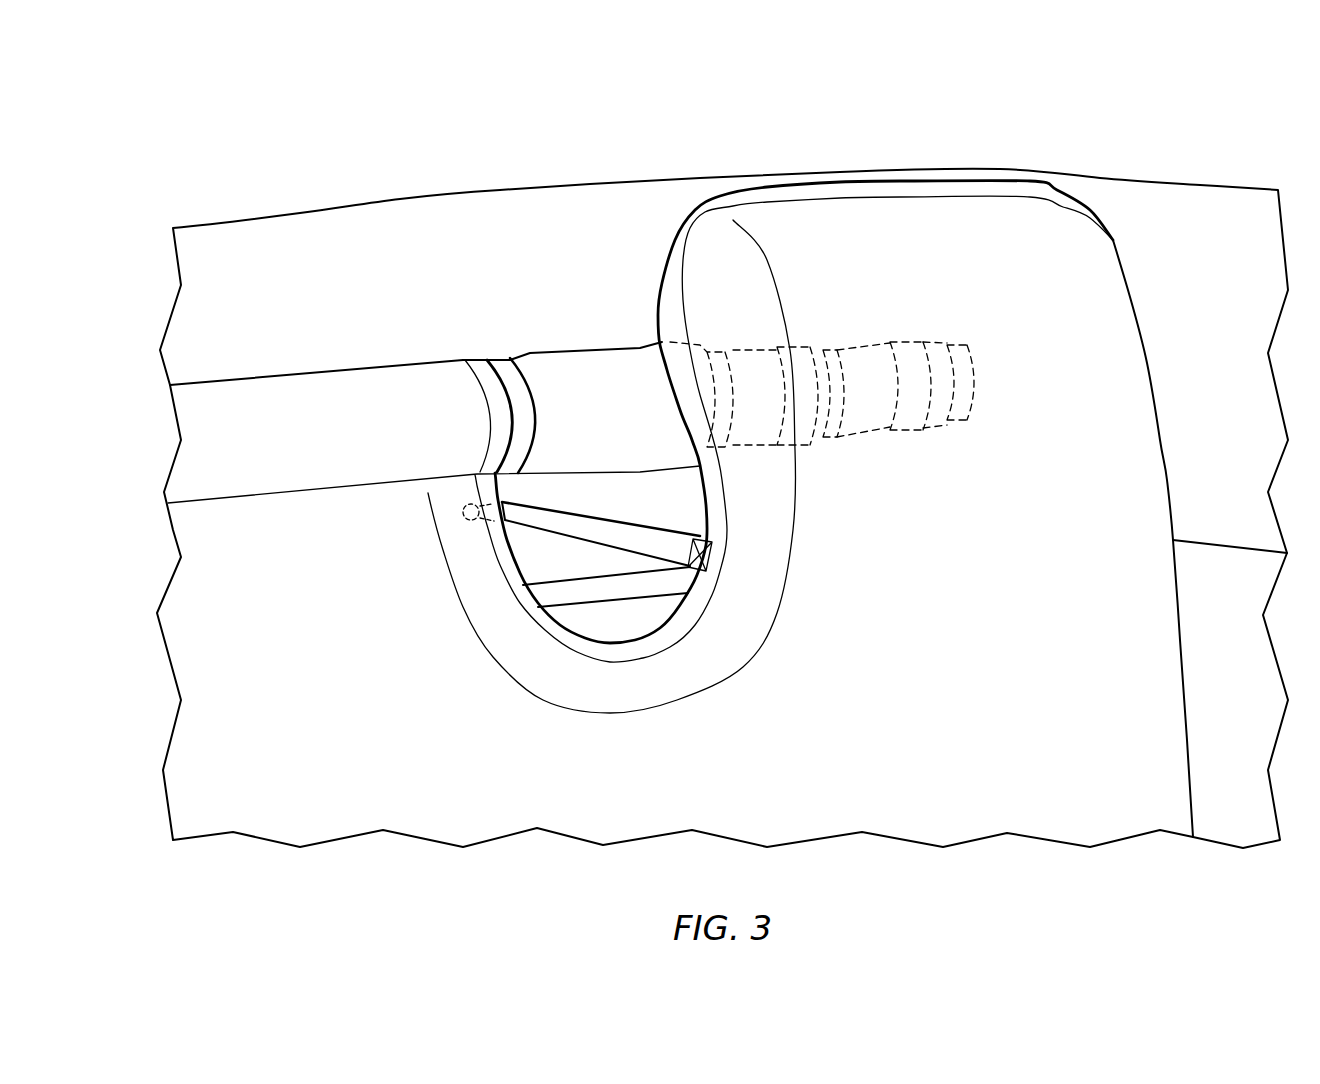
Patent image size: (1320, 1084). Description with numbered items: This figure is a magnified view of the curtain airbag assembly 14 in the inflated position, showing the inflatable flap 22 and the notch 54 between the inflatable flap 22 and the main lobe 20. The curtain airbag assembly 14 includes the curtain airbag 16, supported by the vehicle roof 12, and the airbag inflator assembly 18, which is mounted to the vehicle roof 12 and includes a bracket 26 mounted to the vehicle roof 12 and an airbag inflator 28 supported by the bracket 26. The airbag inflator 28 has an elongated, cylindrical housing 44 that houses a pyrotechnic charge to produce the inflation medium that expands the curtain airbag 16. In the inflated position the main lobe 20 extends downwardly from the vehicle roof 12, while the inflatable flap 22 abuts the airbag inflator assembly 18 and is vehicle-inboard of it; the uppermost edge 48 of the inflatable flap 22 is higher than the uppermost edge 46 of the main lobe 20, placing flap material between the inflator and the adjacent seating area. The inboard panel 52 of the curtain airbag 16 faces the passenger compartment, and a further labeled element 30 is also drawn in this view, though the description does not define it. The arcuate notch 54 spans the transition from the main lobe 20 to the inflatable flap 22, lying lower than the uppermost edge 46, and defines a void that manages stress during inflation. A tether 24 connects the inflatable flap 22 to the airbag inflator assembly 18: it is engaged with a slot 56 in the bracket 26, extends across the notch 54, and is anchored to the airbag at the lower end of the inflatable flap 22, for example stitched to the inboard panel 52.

The vehicle roof 12 is at (1226, 180).
The curtain airbag assembly 14 is at (686, 135).
The curtain airbag 16 is at (222, 716).
The airbag inflator assembly 18 is at (579, 320).
The main lobe 20 is at (230, 643).
The inflatable flap 22 is at (998, 278).
The tether 24 is at (590, 528).
The bracket 26 is at (613, 497).
The airbag inflator 28 is at (622, 350).
The side panel portion 30 is at (1203, 248).
The housing 44 is at (850, 347).
The uppermost edge 46 is at (333, 362).
The uppermost edge 48 is at (823, 180).
The inboard panel 52 is at (293, 817).
The notch 54 is at (630, 620).
The slot 56 is at (473, 520).